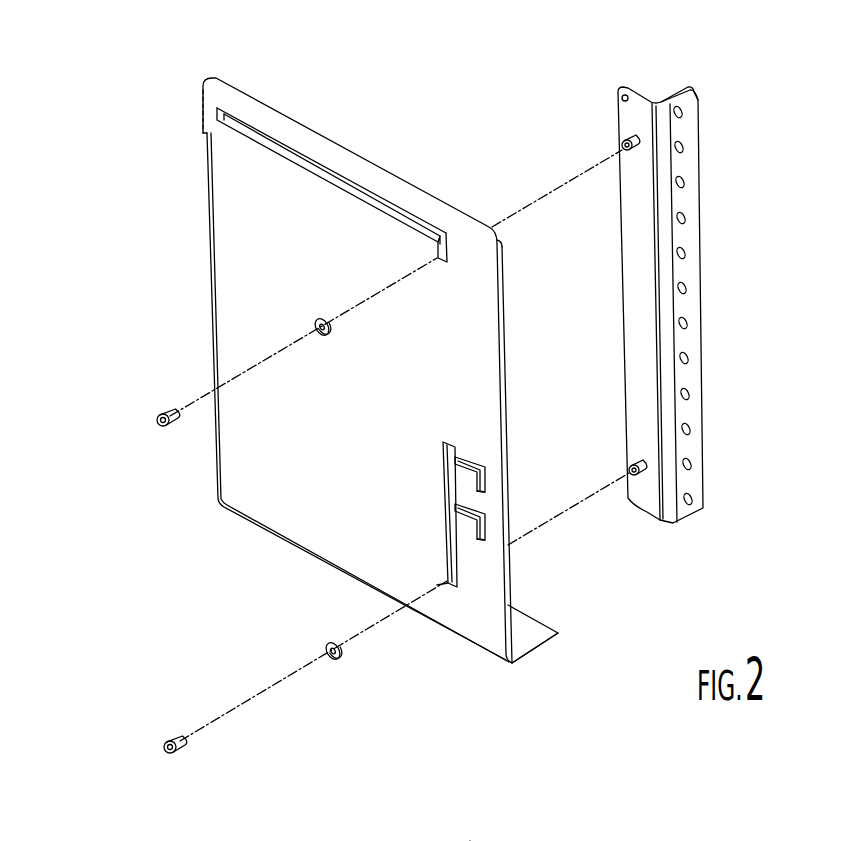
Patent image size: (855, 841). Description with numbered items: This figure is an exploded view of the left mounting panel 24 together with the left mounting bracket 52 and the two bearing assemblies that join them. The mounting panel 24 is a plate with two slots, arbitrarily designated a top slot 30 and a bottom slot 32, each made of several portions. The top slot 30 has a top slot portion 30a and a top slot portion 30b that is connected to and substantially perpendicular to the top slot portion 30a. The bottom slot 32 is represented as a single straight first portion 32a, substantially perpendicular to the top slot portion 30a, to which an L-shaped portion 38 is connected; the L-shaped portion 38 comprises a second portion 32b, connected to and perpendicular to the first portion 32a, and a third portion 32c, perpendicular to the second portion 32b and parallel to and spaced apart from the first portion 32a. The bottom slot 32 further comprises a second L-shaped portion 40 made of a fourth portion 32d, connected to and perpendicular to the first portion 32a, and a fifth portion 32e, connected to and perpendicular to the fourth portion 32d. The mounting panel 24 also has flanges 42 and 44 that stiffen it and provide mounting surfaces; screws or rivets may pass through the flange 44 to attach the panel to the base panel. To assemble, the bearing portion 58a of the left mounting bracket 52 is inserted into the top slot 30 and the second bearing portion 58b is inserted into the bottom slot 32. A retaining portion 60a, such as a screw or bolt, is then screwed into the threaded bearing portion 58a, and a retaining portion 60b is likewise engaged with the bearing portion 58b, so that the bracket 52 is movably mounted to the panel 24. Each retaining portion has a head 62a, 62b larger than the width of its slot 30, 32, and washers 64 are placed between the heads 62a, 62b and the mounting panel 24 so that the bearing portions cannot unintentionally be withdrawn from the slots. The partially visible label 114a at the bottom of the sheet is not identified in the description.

The left mounting panel 24 is at (242, 90).
The top slot 30 is at (340, 204).
The top slot portion 30a is at (307, 155).
The top slot portion 30b is at (448, 247).
The bottom slot 32 is at (466, 554).
The first portion 32a is at (470, 570).
The second portion 32b is at (470, 453).
The third portion 32c is at (524, 475).
The fourth portion 32d is at (475, 505).
The fifth portion 32e is at (488, 532).
The L-shaped portion 38 is at (535, 447).
The second L-shaped portion 40 is at (551, 549).
The flange 42 is at (203, 143).
The flange 44 is at (545, 645).
The left mounting bracket 52 is at (677, 88).
The bearing portion 58a is at (627, 138).
The bearing portion 58b is at (643, 473).
The retaining portion 60a is at (180, 430).
The retaining portion 60b is at (187, 762).
The head 62a is at (163, 413).
The head 62b is at (167, 738).
The washer 64 is at (325, 336).
The component 114a (partially shown) 114a is at (480, 832).